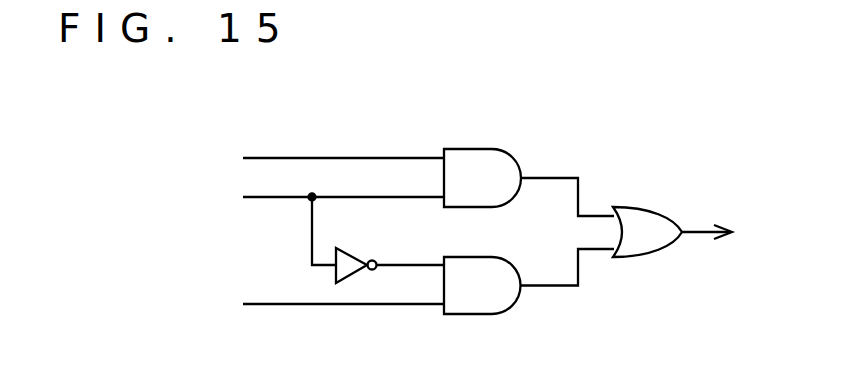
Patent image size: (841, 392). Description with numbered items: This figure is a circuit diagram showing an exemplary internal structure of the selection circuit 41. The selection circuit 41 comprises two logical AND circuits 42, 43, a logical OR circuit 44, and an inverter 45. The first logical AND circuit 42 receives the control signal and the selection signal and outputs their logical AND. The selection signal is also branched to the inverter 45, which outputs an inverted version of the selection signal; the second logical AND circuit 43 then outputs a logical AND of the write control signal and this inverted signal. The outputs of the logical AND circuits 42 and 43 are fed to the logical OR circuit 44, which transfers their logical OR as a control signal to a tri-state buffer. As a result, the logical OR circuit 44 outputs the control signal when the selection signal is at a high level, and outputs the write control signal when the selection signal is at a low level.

The selection circuit 41 is at (710, 316).
The logical AND circuit 42 is at (467, 147).
The logical AND circuit 43 is at (467, 315).
The logical OR circuit 44 is at (629, 204).
The inverter 45 is at (354, 255).